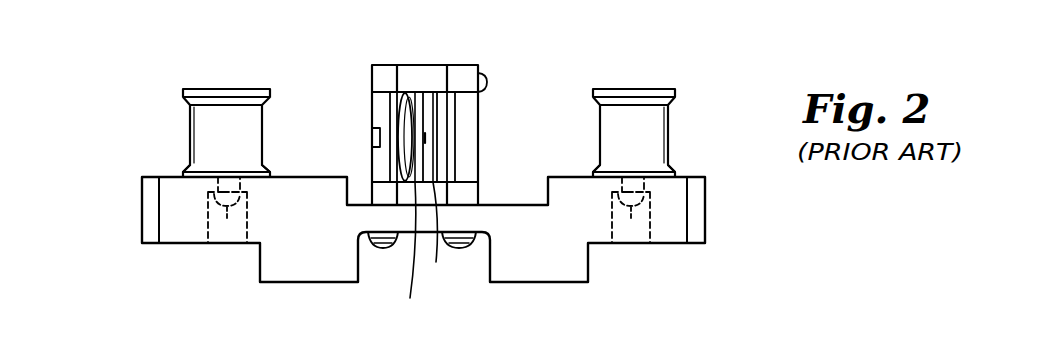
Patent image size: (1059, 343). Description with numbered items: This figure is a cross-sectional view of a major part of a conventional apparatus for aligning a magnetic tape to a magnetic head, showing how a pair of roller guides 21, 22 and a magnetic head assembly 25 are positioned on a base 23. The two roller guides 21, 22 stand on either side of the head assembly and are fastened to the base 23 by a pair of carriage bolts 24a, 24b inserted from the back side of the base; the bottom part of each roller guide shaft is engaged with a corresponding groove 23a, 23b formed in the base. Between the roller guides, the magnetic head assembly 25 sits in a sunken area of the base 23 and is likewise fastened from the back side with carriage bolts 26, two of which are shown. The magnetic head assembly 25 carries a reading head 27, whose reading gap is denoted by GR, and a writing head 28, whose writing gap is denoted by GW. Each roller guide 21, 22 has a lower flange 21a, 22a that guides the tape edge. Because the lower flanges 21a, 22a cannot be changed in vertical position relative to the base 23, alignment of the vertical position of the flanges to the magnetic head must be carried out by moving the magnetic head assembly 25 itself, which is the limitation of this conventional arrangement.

The roller guide 21 is at (210, 122).
The lower flange 21a is at (208, 172).
The roller guide 22 is at (627, 120).
The lower flange 22a is at (655, 165).
The base 23 is at (320, 270).
The groove 23a is at (210, 183).
The groove 23b is at (648, 186).
The carriage bolt 24a is at (227, 218).
The carriage bolt 24b is at (631, 218).
The magnetic head assembly 25 is at (478, 137).
The carriage bolt 26 is at (385, 249).
The reading head 27 is at (446, 234).
The writing head 28 is at (404, 253).
The writing gap GW is at (415, 95).
The reading gap GR is at (433, 95).